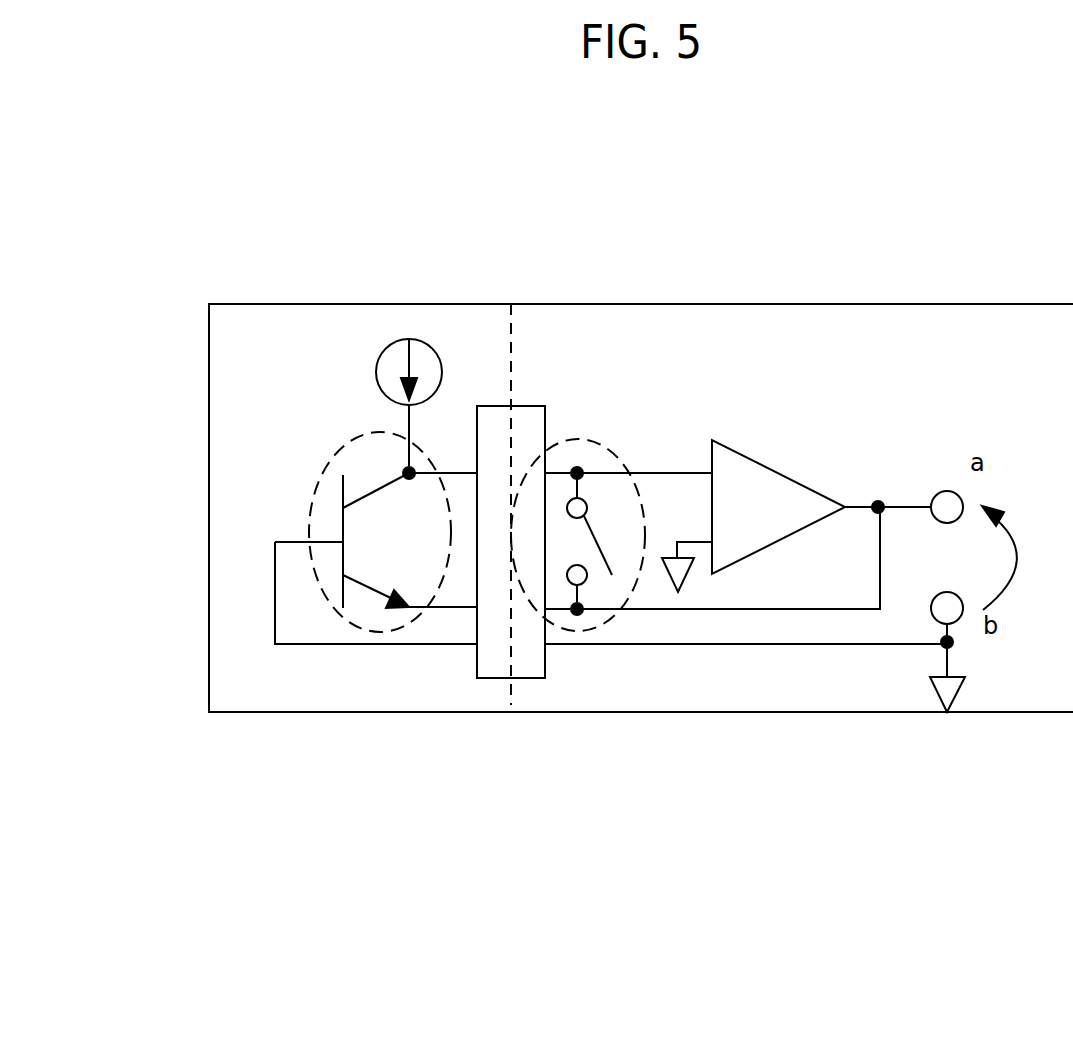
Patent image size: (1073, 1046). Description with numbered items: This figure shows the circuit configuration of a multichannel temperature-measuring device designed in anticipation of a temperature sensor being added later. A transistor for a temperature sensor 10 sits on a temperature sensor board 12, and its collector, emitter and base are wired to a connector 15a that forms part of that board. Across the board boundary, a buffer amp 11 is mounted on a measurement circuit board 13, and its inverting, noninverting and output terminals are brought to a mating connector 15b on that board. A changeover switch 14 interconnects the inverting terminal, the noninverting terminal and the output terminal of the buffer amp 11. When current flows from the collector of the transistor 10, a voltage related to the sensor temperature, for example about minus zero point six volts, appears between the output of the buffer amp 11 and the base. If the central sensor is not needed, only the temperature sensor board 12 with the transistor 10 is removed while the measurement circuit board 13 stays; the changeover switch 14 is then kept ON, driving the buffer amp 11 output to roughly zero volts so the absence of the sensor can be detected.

The transistor for a temperature sensor 10 is at (340, 455).
The buffer amp 11 is at (752, 450).
The temperature sensor board 12 is at (310, 302).
The measurement circuit board 13 is at (982, 712).
The changeover switch 14 is at (585, 437).
The connector 15a is at (492, 678).
The connector 15b is at (528, 678).